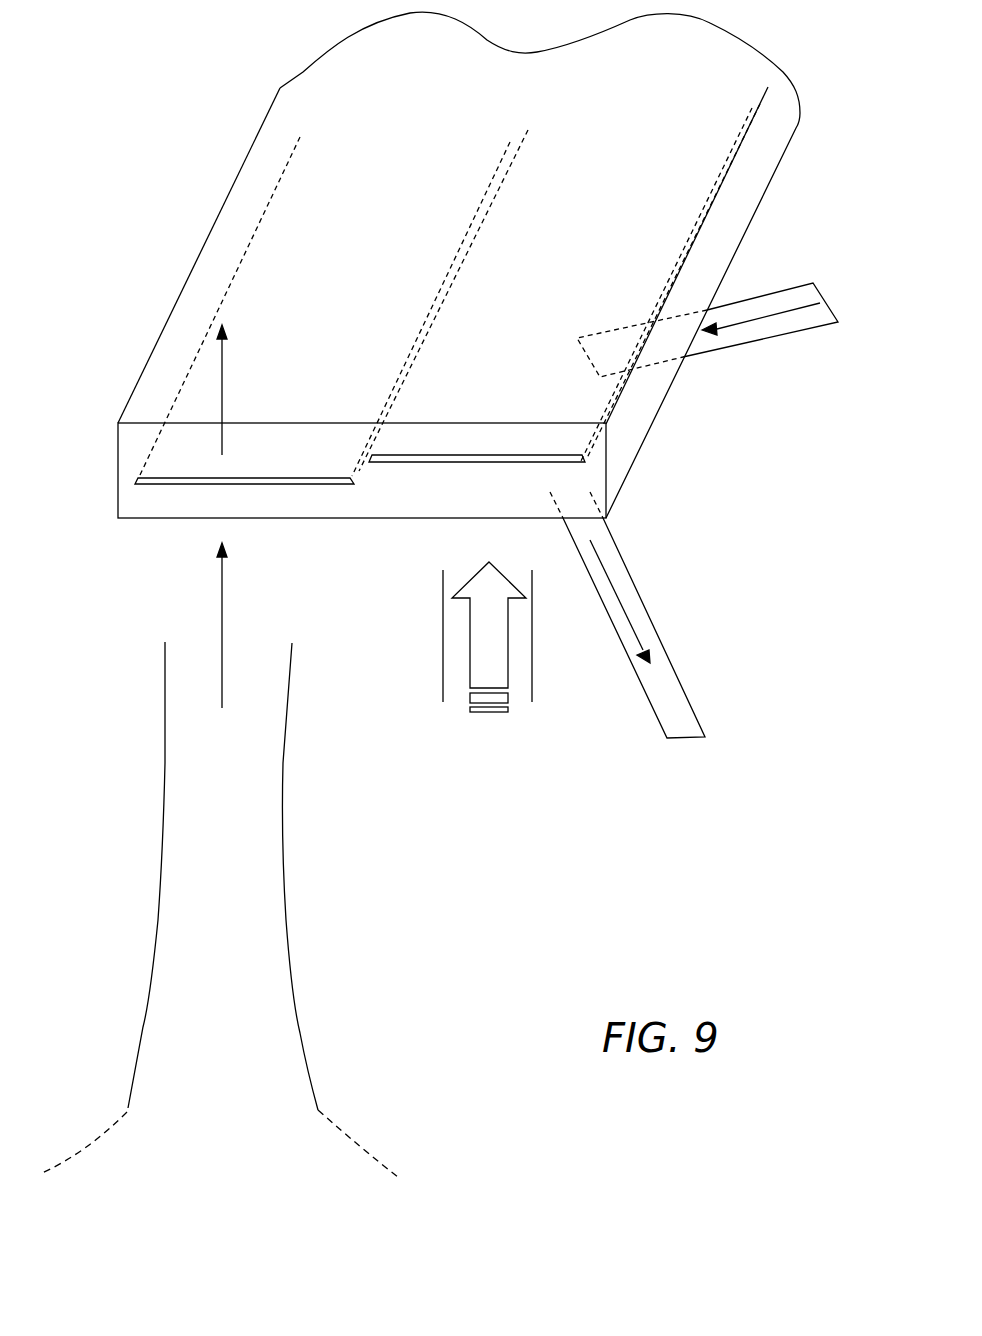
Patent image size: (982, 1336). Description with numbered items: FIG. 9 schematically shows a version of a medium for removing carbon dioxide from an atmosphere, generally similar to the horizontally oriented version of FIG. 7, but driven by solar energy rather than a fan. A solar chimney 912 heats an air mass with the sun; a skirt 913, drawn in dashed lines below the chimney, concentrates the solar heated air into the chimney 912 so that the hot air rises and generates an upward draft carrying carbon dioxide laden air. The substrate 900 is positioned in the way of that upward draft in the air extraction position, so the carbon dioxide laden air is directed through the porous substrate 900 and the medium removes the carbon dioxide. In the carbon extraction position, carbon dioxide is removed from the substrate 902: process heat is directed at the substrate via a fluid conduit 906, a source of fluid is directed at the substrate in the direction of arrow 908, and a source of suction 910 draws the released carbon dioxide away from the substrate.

The substrate 900 is at (317, 240).
The substrate 902 is at (615, 240).
The fluid conduit 906 is at (767, 337).
The arrow 908 is at (532, 635).
The source of suction 910 is at (657, 632).
The solar chimney 912 is at (283, 896).
The skirt 913 is at (93, 1142).